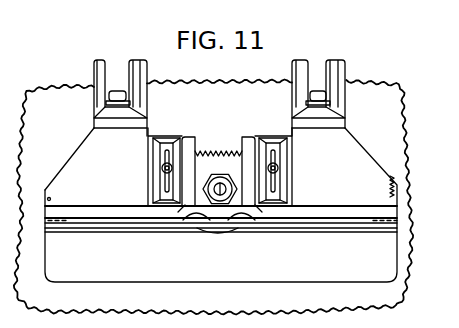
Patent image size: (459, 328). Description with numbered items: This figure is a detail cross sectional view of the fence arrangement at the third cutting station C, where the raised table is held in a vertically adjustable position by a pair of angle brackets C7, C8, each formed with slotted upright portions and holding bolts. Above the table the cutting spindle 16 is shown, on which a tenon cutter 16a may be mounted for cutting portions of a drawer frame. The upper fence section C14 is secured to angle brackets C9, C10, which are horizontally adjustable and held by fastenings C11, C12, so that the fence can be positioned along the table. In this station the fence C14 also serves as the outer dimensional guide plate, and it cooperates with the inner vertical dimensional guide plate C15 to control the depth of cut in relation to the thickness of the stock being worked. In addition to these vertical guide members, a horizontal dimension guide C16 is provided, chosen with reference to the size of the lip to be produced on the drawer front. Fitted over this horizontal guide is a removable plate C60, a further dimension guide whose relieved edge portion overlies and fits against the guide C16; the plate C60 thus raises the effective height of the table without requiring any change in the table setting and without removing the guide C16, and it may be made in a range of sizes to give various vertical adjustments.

The angle bracket C7 is at (148, 66).
The angle bracket C8 is at (340, 70).
The cutting station C is at (231, 102).
The tenon cutter 16a is at (204, 150).
The cutting spindle 16 is at (220, 177).
The angle bracket C9 is at (154, 186).
The fastening C11 is at (161, 168).
The angle bracket C10 is at (288, 184).
The fastening C12 is at (288, 164).
The inner vertical dimensional guide plate C15 is at (80, 208).
The outer dimensional guide plate C14 is at (85, 222).
The horizontal dimension guide C16 is at (104, 229).
The removable plate C60 is at (257, 276).